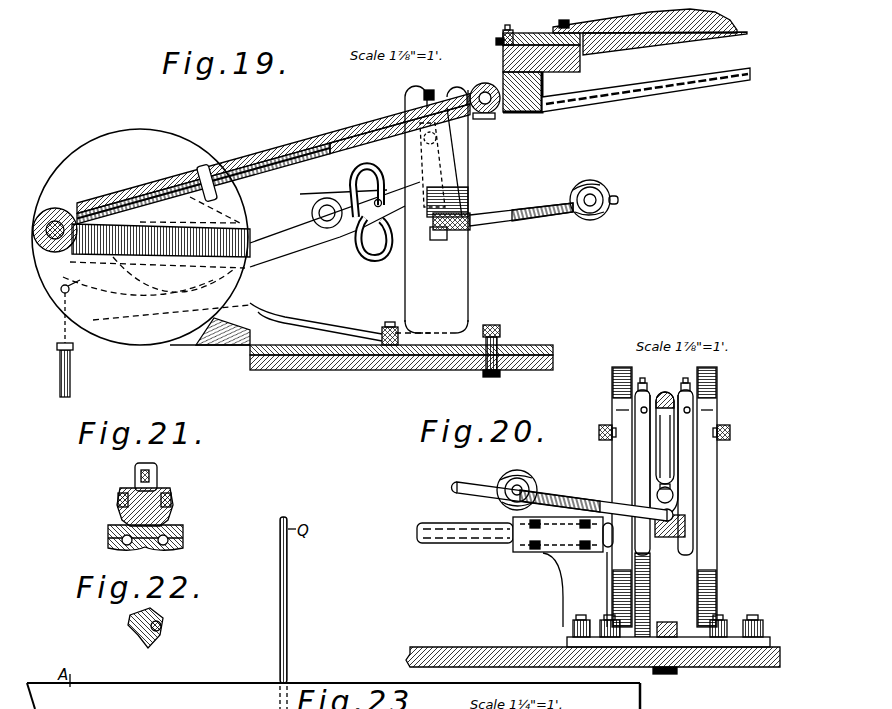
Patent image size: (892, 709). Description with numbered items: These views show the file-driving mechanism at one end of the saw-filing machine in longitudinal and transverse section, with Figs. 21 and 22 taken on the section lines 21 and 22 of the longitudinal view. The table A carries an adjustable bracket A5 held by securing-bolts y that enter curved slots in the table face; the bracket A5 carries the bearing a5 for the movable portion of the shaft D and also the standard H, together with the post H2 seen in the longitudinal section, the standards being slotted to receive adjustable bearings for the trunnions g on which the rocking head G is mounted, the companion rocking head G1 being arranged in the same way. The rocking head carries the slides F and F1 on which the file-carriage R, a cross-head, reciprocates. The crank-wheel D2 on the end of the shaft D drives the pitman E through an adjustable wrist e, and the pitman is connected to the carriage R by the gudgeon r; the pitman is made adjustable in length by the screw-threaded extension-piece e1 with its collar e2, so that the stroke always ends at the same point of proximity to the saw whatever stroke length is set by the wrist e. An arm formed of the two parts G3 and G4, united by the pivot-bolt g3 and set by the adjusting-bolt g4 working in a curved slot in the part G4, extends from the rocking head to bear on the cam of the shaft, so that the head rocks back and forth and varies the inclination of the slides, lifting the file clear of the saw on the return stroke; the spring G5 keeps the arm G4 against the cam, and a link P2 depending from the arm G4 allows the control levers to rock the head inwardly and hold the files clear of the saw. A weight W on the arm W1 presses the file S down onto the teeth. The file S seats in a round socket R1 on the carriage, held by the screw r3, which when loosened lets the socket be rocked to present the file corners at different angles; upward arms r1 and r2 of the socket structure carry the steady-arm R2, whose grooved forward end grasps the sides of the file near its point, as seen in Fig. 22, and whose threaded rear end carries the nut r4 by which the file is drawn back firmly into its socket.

In FIG. 19, the crank-wheel D2 is at (141, 131).
In FIG. 20, the crank-wheel D2 is at (650, 570).
In FIG. 19, the screw-threaded extension-piece e1 is at (269, 150).
In FIG. 19, the collar on screw e2 is at (205, 176).
In FIG. 19, the arm part G4 is at (280, 233).
In FIG. 19, the pivot-bolt g3 is at (327, 205).
In FIG. 19, the arm part G3 is at (352, 228).
In FIG. 19, the adjusting-bolt g4 is at (378, 199).
In FIG. 19, the standard post H2 is at (452, 282).
In FIG. 19, the rocking head G1 is at (460, 187).
In FIG. 19, the weight arm W1 is at (537, 207).
In FIG. 20, the weight arm W1 is at (570, 502).
In FIG. 19, the weight W is at (594, 188).
In FIG. 20, the weight W is at (519, 480).
In FIG. 19, the spring G5 is at (305, 318).
In FIG. 19, the adjustable bracket A5 is at (250, 352).
In FIG. 20, the adjustable bracket A5 is at (563, 638).
In FIG. 19, the table A is at (543, 361).
In FIG. 20, the table A is at (447, 655).
In FIG. 19, the securing-bolt y is at (500, 375).
In FIG. 20, the securing-bolt y is at (677, 674).
In FIG. 19, the link P2 is at (71, 369).
In FIG. 19, the file-carriage R is at (504, 88).
In FIG. 21, the file-carriage R is at (173, 510).
In FIG. 19, the gudgeon r is at (485, 118).
In FIG. 19, the file socket R1 is at (580, 63).
In FIG. 21, the file socket R1 is at (118, 513).
In FIG. 19, the nut r4 is at (497, 42).
In FIG. 19, the upwardly-projecting arm r1 is at (505, 29).
In FIG. 21, the upwardly-projecting arm r1 is at (157, 468).
In FIG. 19, the upwardly-projecting arm r2 is at (564, 21).
In FIG. 19, the steady-arm R2 is at (607, 20).
In FIG. 21, the steady-arm R2 is at (137, 477).
In FIG. 22, the steady-arm R2 is at (163, 616).
In FIG. 19, the section line 22 22 is at (730, 21).
In FIG. 19, the file S is at (662, 44).
In FIG. 22, the file S is at (156, 632).
In FIG. 19, the slide F1 is at (673, 84).
In FIG. 21, the slide F1 is at (110, 535).
In FIG. 19, the section line 21 21 is at (531, 21).
In FIG. 20, the standard H is at (712, 391).
In FIG. 20, the slide F is at (639, 410).
In FIG. 20, the trunnion g is at (599, 436).
In FIG. 20, the pitman E is at (665, 392).
In FIG. 20, the rocking head G is at (688, 471).
In FIG. 20, the wrist e is at (688, 523).
In FIG. 20, the shaft D is at (465, 543).
In FIG. 20, the bearing a5 is at (526, 552).
In FIG. 21, the securing screw r3 is at (120, 498).